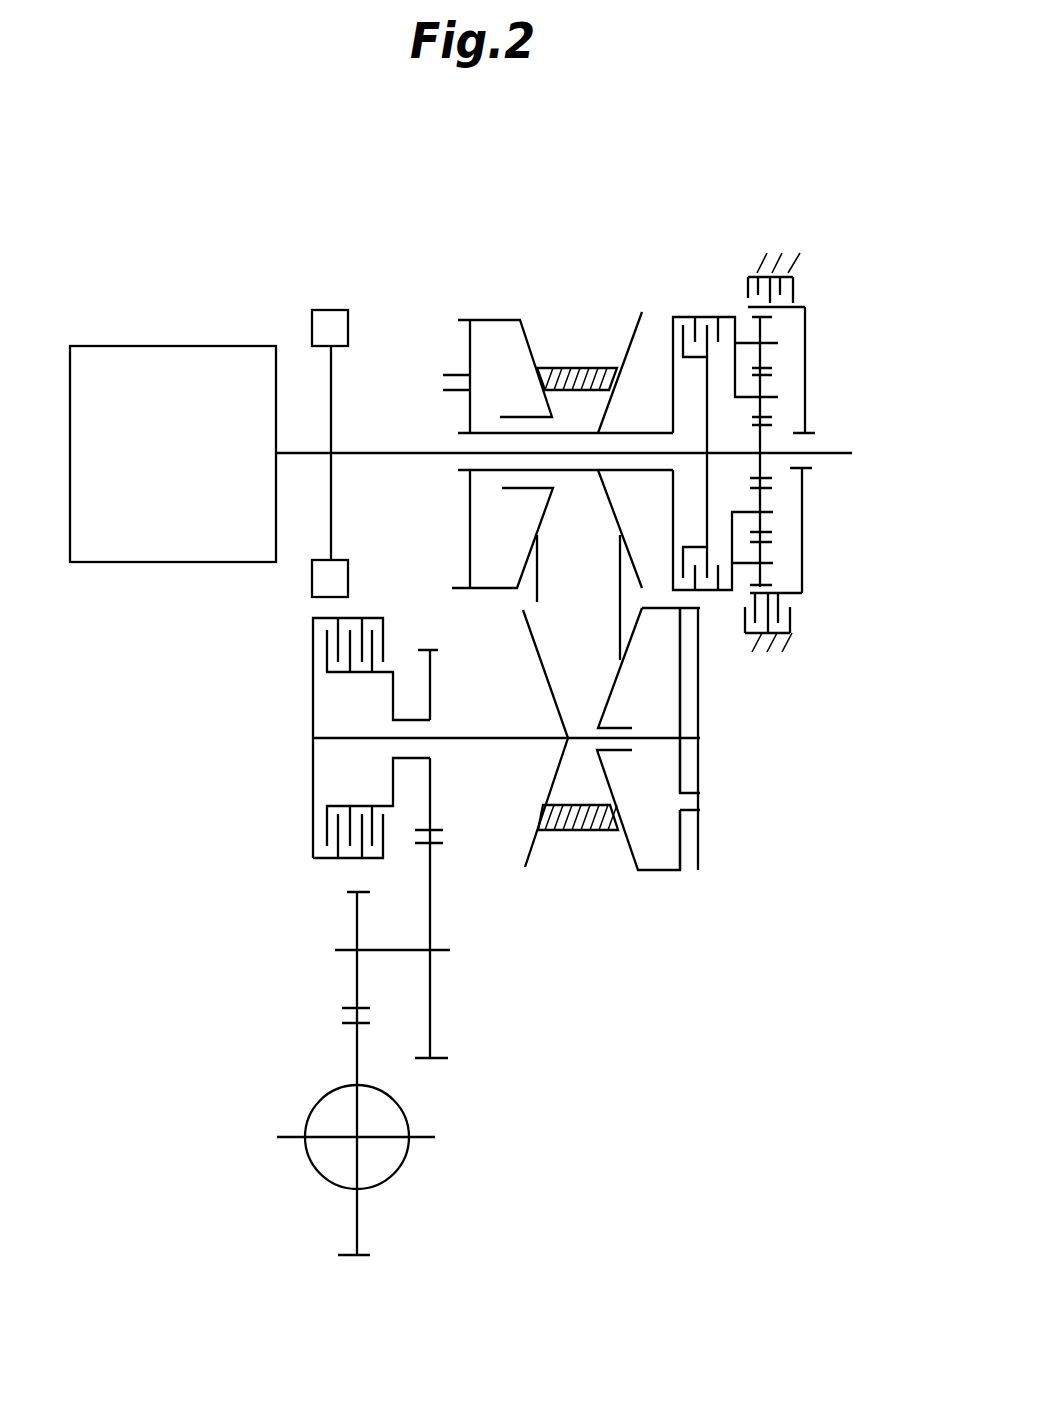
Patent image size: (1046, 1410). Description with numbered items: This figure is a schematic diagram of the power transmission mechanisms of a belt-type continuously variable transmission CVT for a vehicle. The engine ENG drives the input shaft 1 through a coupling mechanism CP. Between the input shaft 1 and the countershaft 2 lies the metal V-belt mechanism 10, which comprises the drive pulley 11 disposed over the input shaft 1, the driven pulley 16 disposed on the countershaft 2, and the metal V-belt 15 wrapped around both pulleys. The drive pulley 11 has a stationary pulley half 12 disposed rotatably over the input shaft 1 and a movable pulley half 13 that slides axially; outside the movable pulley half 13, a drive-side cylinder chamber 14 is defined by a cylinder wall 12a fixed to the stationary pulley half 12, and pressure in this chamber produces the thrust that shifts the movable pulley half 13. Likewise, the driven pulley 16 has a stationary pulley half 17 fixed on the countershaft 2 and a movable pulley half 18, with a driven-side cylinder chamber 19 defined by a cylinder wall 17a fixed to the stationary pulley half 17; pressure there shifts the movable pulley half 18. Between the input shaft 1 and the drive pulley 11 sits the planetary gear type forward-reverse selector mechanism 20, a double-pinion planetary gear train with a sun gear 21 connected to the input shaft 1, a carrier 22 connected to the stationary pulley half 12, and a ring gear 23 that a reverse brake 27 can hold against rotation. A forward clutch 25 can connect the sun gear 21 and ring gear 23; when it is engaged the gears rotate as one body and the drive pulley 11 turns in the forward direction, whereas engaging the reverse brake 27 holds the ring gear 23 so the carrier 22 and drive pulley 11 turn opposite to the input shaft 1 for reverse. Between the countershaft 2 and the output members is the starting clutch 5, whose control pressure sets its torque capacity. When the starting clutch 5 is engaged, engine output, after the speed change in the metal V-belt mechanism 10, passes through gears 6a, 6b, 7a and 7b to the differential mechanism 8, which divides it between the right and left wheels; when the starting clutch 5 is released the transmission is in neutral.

The input shaft 1 is at (393, 455).
The countershaft 2 is at (483, 742).
The starting clutch 5 is at (298, 838).
The gear 6a is at (432, 665).
The gear 6b is at (440, 1060).
The gear 7a is at (355, 932).
The gear 7b is at (357, 1053).
The differential mechanism 8 is at (397, 1168).
The metal V-belt mechanism 10 is at (537, 242).
The drive pulley 11 is at (493, 312).
The stationary pulley half 12 is at (633, 328).
The cylinder wall 12a is at (470, 413).
The movable pulley half 13 is at (525, 320).
The drive-side cylinder chamber 14 is at (514, 399).
The metal V-belt 15 is at (537, 600).
The driven pulley 16 is at (616, 877).
The stationary pulley half 17 is at (527, 868).
The cylinder wall 17a is at (683, 708).
The movable pulley half 18 is at (636, 850).
The driven-side cylinder chamber 19 is at (660, 713).
The planetary gear type forward-reverse selector mechanism 20 is at (820, 262).
The sun gear 21 is at (762, 443).
The carrier 22 is at (745, 368).
The ring gear 23 is at (797, 313).
The forward clutch 25 is at (697, 317).
The reverse brake 27 is at (795, 287).
The coupling mechanism CP is at (331, 310).
The engine ENG is at (186, 462).
The continuously variable transmission CVT is at (645, 158).